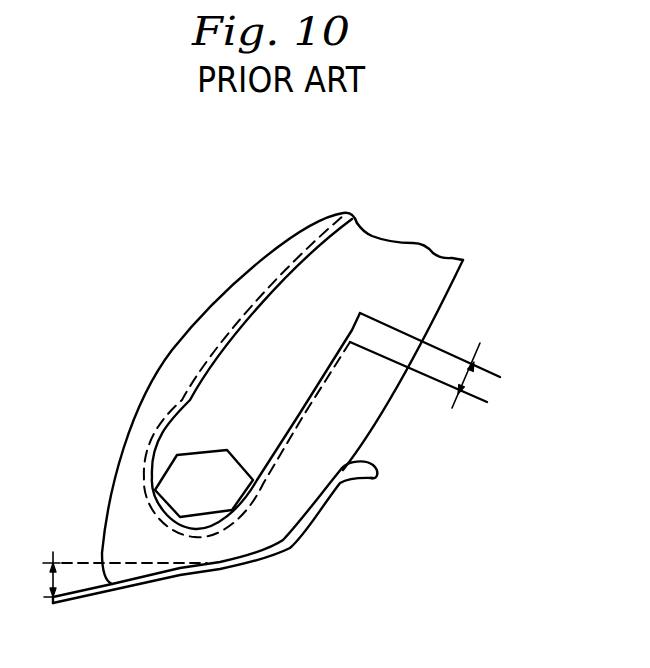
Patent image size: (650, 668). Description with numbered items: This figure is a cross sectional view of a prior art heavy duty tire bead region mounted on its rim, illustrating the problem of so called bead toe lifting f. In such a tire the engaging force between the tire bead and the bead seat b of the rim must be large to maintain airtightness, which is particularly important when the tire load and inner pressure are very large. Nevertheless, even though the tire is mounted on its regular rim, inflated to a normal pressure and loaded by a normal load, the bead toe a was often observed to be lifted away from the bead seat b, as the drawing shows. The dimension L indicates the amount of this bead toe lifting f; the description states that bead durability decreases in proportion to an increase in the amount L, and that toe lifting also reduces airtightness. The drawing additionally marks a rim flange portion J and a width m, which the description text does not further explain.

The bead toe a is at (133, 583).
The bead seat b is at (158, 574).
The bead toe lifting f is at (97, 552).
The hooked end of plate J is at (377, 471).
The amount of bead toe lifting L is at (50, 575).
The margin width m is at (467, 378).